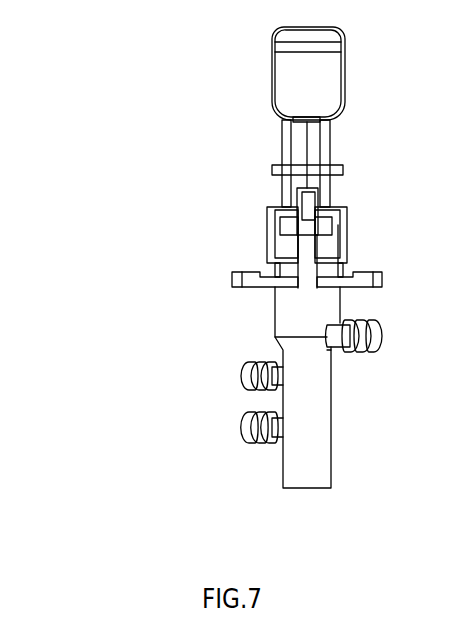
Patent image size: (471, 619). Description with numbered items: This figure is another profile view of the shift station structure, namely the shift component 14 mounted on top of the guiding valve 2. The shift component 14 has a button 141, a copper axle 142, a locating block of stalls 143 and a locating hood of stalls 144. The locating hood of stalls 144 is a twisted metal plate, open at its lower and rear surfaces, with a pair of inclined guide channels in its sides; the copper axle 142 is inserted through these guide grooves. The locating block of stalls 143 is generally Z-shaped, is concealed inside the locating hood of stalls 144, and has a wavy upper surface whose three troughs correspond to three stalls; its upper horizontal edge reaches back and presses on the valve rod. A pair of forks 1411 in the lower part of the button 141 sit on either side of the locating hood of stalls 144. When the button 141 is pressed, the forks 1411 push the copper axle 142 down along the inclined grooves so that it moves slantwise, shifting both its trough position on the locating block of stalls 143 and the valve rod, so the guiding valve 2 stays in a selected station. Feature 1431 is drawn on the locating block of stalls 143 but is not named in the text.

The shift component 14 is at (235, 154).
The button 141 is at (302, 45).
The fork 1411 is at (287, 135).
The copper axle 142 is at (273, 170).
The locating block of stalls 143 is at (308, 203).
The inner block 1431 is at (290, 223).
The locating hood of stalls 144 is at (297, 258).
The guiding valve 2 is at (325, 428).